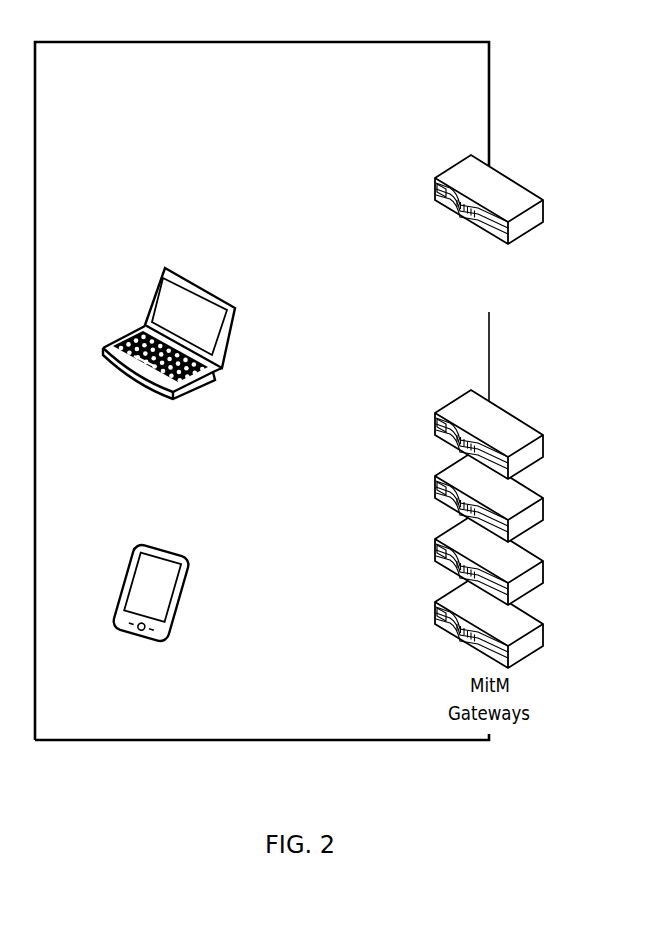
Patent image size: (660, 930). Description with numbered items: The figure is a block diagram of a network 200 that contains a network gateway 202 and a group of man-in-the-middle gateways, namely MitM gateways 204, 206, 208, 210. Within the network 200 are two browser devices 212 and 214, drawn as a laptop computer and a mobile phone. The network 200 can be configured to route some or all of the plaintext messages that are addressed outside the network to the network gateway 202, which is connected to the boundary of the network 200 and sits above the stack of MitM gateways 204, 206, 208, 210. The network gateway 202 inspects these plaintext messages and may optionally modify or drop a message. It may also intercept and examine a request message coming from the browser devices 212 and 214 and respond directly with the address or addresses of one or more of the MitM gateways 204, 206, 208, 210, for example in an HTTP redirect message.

The network 200 is at (262, 42).
The network gateway 202 is at (505, 170).
The MitM gateway 204 is at (543, 452).
The MitM gateway 206 is at (543, 515).
The MitM gateway 208 is at (543, 578).
The MitM gateway 210 is at (543, 641).
The browser device 212 is at (195, 284).
The browser device 214 is at (177, 548).